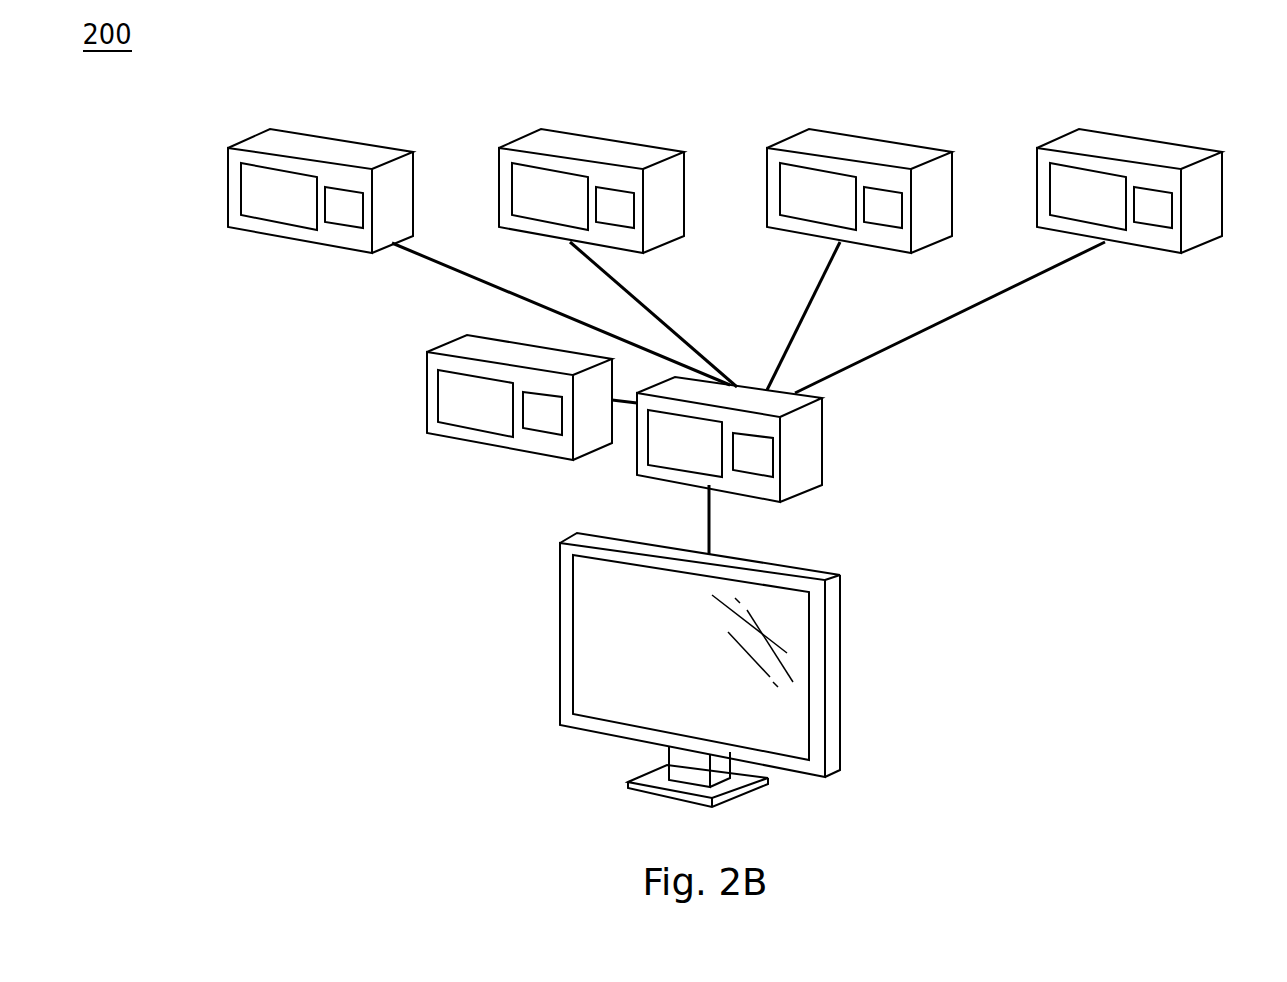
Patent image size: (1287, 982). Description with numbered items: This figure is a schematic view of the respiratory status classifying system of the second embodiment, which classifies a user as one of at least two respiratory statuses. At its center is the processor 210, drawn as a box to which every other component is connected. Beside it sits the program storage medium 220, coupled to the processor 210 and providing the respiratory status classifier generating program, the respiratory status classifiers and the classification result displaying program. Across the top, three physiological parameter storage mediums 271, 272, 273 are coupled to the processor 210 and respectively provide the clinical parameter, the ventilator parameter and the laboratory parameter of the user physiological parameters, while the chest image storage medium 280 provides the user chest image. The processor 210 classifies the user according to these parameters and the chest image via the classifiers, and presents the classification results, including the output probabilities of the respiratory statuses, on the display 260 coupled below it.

The processor 210 is at (807, 442).
The program storage medium 220 is at (427, 392).
The display 260 is at (832, 685).
The physiological parameter storage medium 271 is at (325, 145).
The physiological parameter storage medium 272 is at (595, 145).
The physiological parameter storage medium 273 is at (864, 145).
The chest image storage medium 280 is at (1133, 145).